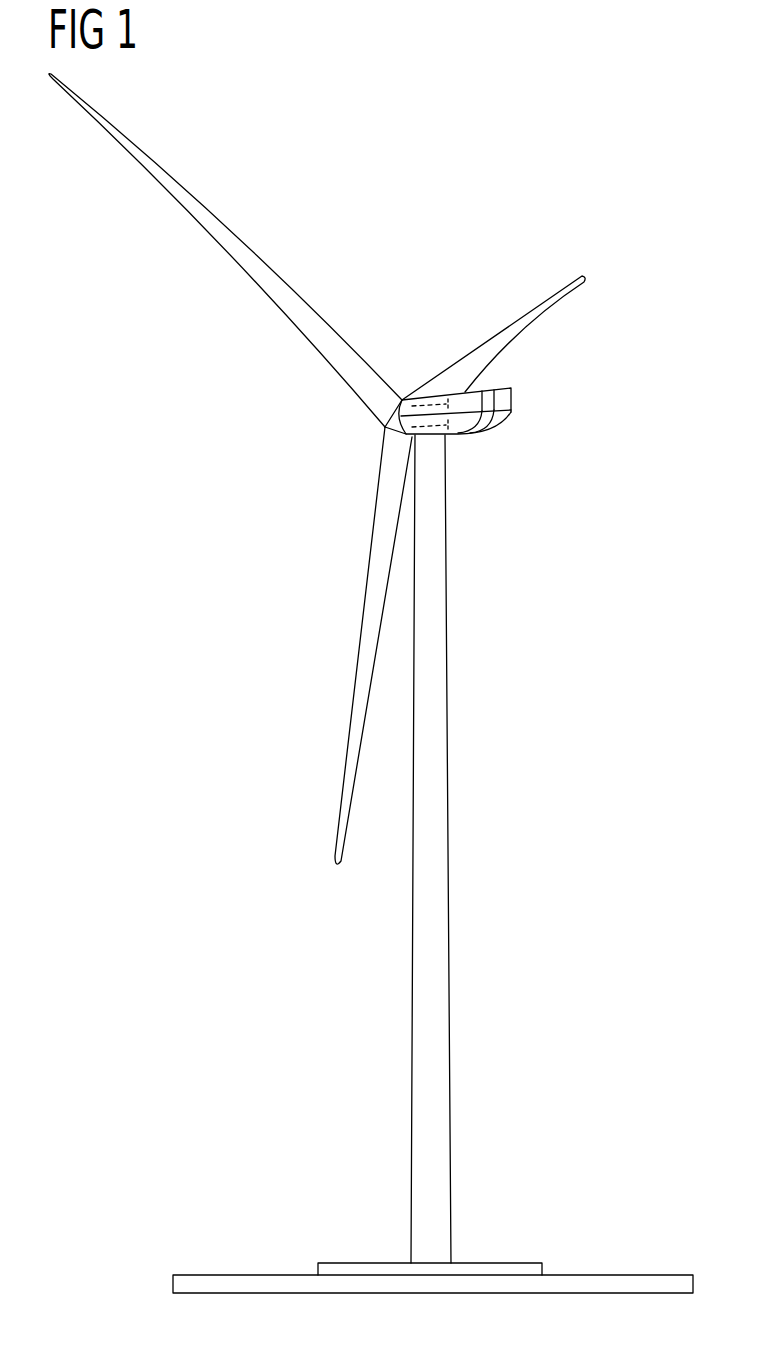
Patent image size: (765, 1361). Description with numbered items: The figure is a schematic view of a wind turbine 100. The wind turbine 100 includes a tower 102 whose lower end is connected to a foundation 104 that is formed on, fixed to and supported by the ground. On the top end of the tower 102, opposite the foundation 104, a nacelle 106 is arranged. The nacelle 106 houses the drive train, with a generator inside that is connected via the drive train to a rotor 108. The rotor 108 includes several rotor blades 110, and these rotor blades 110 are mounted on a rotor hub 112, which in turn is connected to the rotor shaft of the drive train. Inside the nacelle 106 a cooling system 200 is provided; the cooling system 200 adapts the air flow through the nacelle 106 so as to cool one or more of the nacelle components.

The wind turbine 100 is at (536, 713).
The tower 102 is at (419, 957).
The foundation 104 is at (576, 1282).
The nacelle 106 is at (459, 418).
The rotor 108 is at (380, 306).
The rotor blade 110 is at (269, 293).
The rotor hub 112 is at (382, 427).
The cooling system 200 is at (438, 402).